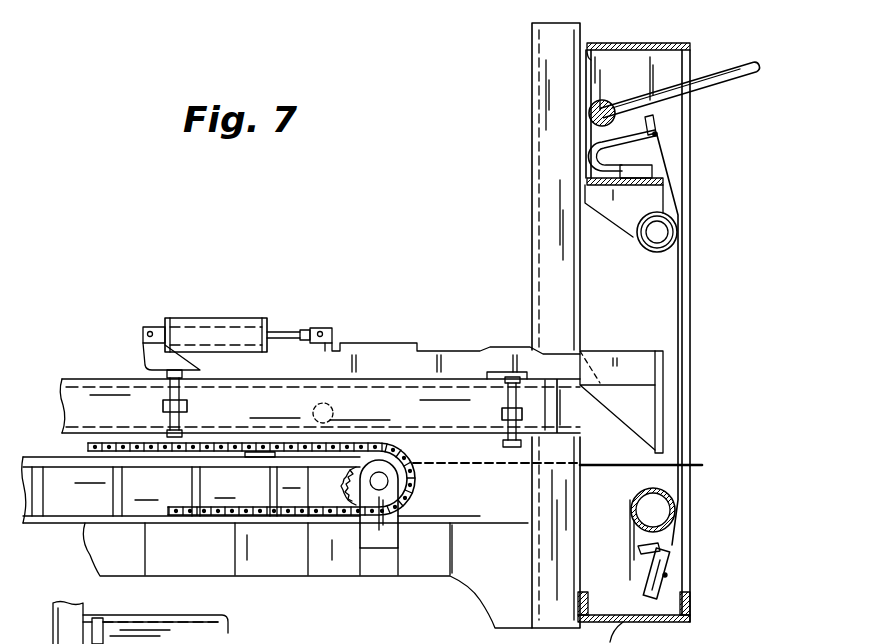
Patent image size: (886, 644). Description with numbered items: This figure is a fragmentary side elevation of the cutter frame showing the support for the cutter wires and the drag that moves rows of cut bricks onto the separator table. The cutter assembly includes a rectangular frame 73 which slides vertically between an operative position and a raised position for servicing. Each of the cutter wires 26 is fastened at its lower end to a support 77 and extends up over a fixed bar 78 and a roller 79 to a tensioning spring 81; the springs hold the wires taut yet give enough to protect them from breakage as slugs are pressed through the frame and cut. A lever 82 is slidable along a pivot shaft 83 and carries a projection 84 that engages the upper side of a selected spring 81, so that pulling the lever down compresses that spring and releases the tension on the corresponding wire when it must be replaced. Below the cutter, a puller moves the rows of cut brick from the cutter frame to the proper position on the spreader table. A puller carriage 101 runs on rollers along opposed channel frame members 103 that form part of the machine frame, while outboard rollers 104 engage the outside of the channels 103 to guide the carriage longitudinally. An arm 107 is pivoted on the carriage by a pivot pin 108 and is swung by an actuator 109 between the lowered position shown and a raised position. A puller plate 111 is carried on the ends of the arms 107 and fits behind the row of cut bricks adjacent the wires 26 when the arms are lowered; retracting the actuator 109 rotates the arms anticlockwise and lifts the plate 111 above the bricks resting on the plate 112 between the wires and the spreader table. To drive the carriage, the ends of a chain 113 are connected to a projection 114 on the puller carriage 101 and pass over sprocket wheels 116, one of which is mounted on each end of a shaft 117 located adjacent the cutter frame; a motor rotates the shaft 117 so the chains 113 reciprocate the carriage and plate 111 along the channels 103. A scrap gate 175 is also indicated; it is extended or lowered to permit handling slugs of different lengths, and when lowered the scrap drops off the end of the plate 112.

The cutter wires 26 is at (682, 318).
The rectangular frame 73 is at (663, 43).
The support 77 is at (668, 565).
The fixed bar 78 is at (660, 487).
The roller 79 is at (677, 238).
The tensioning spring 81 is at (622, 154).
The lever 82 is at (748, 73).
The pivot shaft 83 is at (600, 100).
The projection 84 is at (653, 118).
The puller carriage 101 is at (153, 398).
The channel frame members 103 is at (72, 385).
The outboard rollers 104 is at (188, 405).
The arm 107 is at (448, 357).
The pivot pin 108 is at (333, 411).
The actuator 109 is at (235, 325).
The puller plate 111 is at (660, 407).
The plate 112 is at (600, 463).
The chain 113 is at (153, 450).
The projection 114 is at (262, 458).
The sprocket wheel 116 is at (350, 482).
The shaft 117 is at (388, 485).
The scrap gate 175 is at (478, 466).